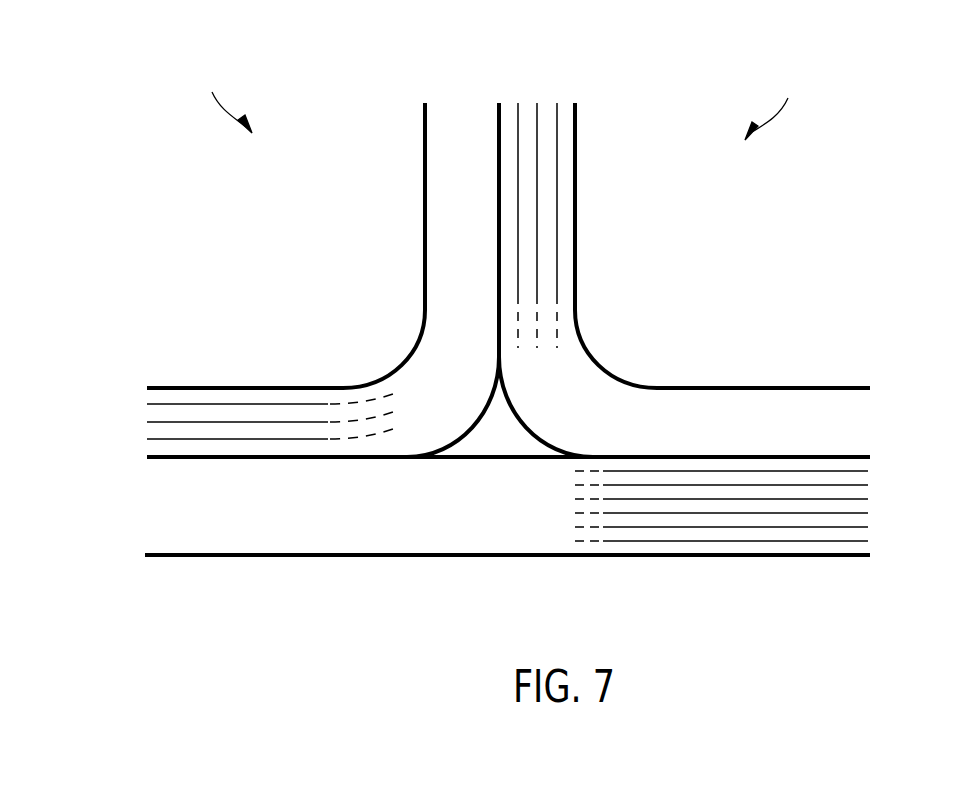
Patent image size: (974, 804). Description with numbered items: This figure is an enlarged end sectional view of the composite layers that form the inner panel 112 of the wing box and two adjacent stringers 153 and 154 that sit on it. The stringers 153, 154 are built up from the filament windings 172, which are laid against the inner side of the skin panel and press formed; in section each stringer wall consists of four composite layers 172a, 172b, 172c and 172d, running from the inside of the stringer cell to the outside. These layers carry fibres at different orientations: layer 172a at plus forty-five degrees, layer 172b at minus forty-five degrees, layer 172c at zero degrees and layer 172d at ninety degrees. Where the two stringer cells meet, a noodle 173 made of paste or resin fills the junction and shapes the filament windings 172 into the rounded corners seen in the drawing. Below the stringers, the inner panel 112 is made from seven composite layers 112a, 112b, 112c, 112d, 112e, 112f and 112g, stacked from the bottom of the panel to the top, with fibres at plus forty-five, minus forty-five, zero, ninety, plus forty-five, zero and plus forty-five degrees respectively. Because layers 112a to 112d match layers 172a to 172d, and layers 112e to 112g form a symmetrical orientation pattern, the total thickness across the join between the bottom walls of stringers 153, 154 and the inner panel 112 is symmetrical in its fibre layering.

The stringer 153 is at (225, 100).
The stringer 154 is at (777, 107).
The filament windings 172 is at (433, 166).
The composite layer 172a is at (570, 133).
The composite layer 172b is at (547, 110).
The composite layer 172c is at (528, 110).
The composite layer 172d is at (507, 108).
The noodle 173 is at (507, 445).
The inner panel 112 is at (415, 545).
The composite layer 112a is at (823, 548).
The composite layer 112b is at (862, 533).
The composite layer 112c is at (862, 523).
The composite layer 112d is at (862, 507).
The composite layer 112e is at (862, 493).
The composite layer 112f is at (862, 478).
The composite layer 112g is at (862, 465).